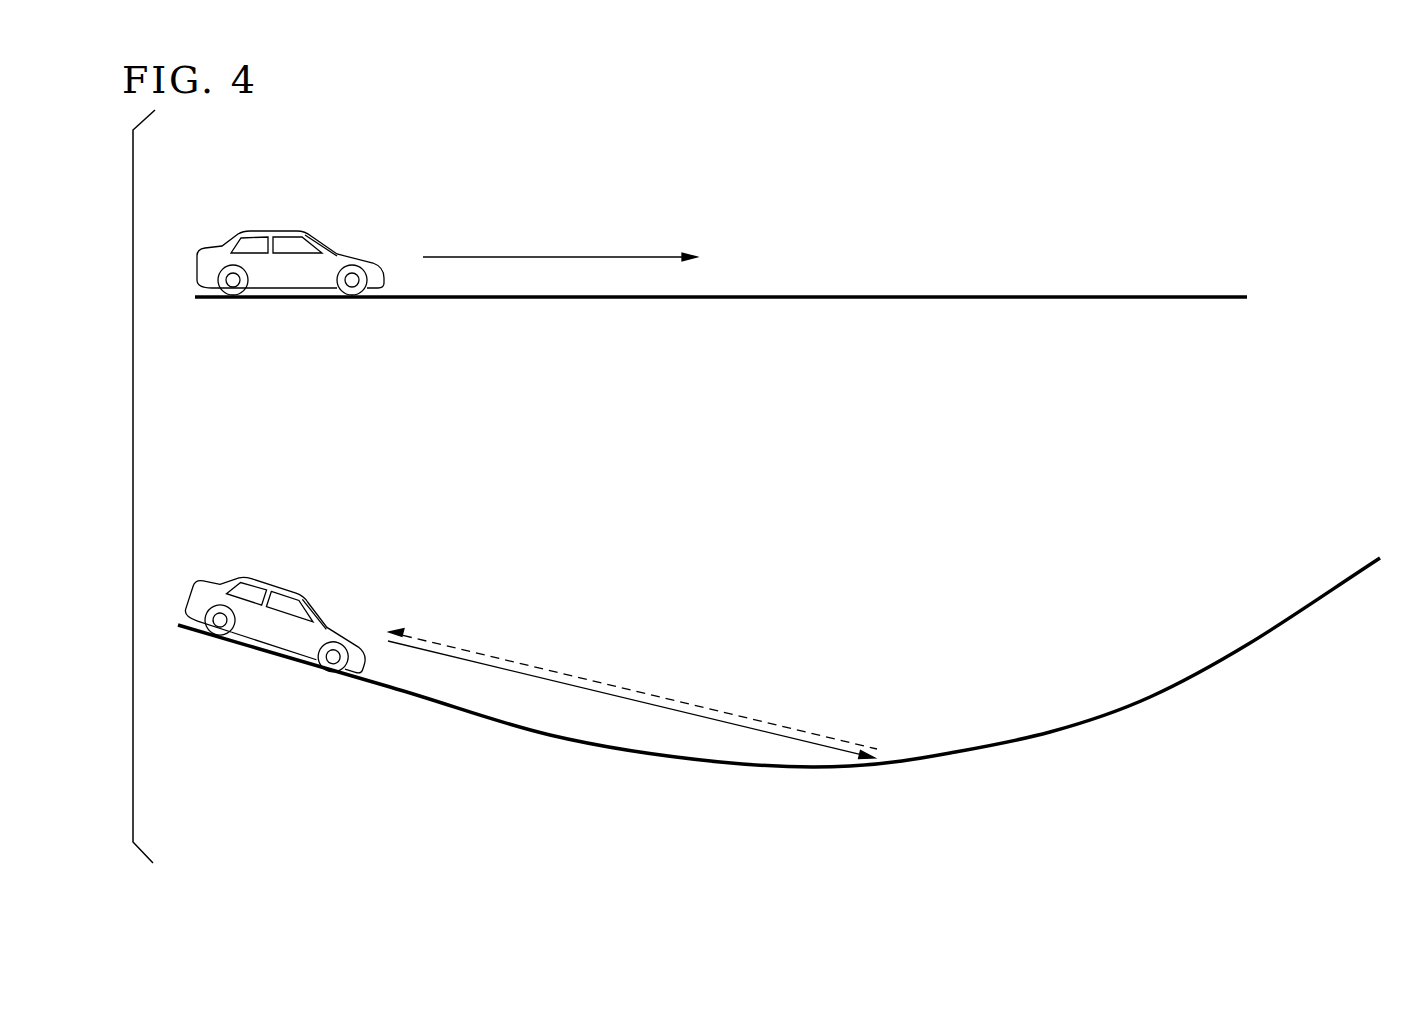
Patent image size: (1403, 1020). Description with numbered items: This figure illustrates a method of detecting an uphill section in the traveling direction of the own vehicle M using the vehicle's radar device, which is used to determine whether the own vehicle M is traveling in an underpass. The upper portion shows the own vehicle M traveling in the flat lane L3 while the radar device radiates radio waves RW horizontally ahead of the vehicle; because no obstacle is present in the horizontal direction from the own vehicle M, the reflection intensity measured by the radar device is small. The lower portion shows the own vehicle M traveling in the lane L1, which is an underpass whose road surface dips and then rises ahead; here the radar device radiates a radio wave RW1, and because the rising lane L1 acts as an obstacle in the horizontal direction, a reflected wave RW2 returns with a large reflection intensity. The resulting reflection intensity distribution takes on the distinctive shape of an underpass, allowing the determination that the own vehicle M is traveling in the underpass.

The own vehicle M is at (279, 232).
The radio waves RW is at (560, 256).
The flat lane L3 is at (718, 299).
The lane L1 is at (720, 764).
The radio wave RW1 is at (603, 695).
The reflected wave RW2 is at (642, 693).